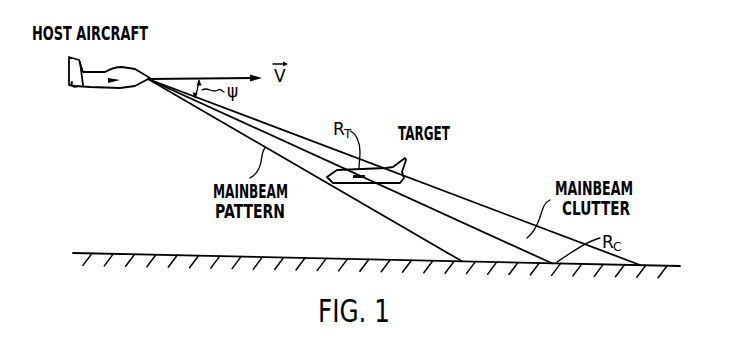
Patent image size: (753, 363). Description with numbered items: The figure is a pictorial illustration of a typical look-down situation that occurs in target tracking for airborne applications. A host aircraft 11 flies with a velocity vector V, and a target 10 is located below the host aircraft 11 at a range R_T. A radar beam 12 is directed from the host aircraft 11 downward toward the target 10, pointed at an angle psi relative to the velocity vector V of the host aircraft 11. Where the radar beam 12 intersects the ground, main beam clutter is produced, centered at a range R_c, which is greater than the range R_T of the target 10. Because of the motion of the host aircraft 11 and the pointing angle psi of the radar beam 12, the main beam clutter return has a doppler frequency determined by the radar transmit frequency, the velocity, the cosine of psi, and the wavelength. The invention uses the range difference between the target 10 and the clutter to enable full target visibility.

The target 10 is at (405, 184).
The host aircraft 11 is at (87, 83).
The radar beam 12 is at (274, 134).